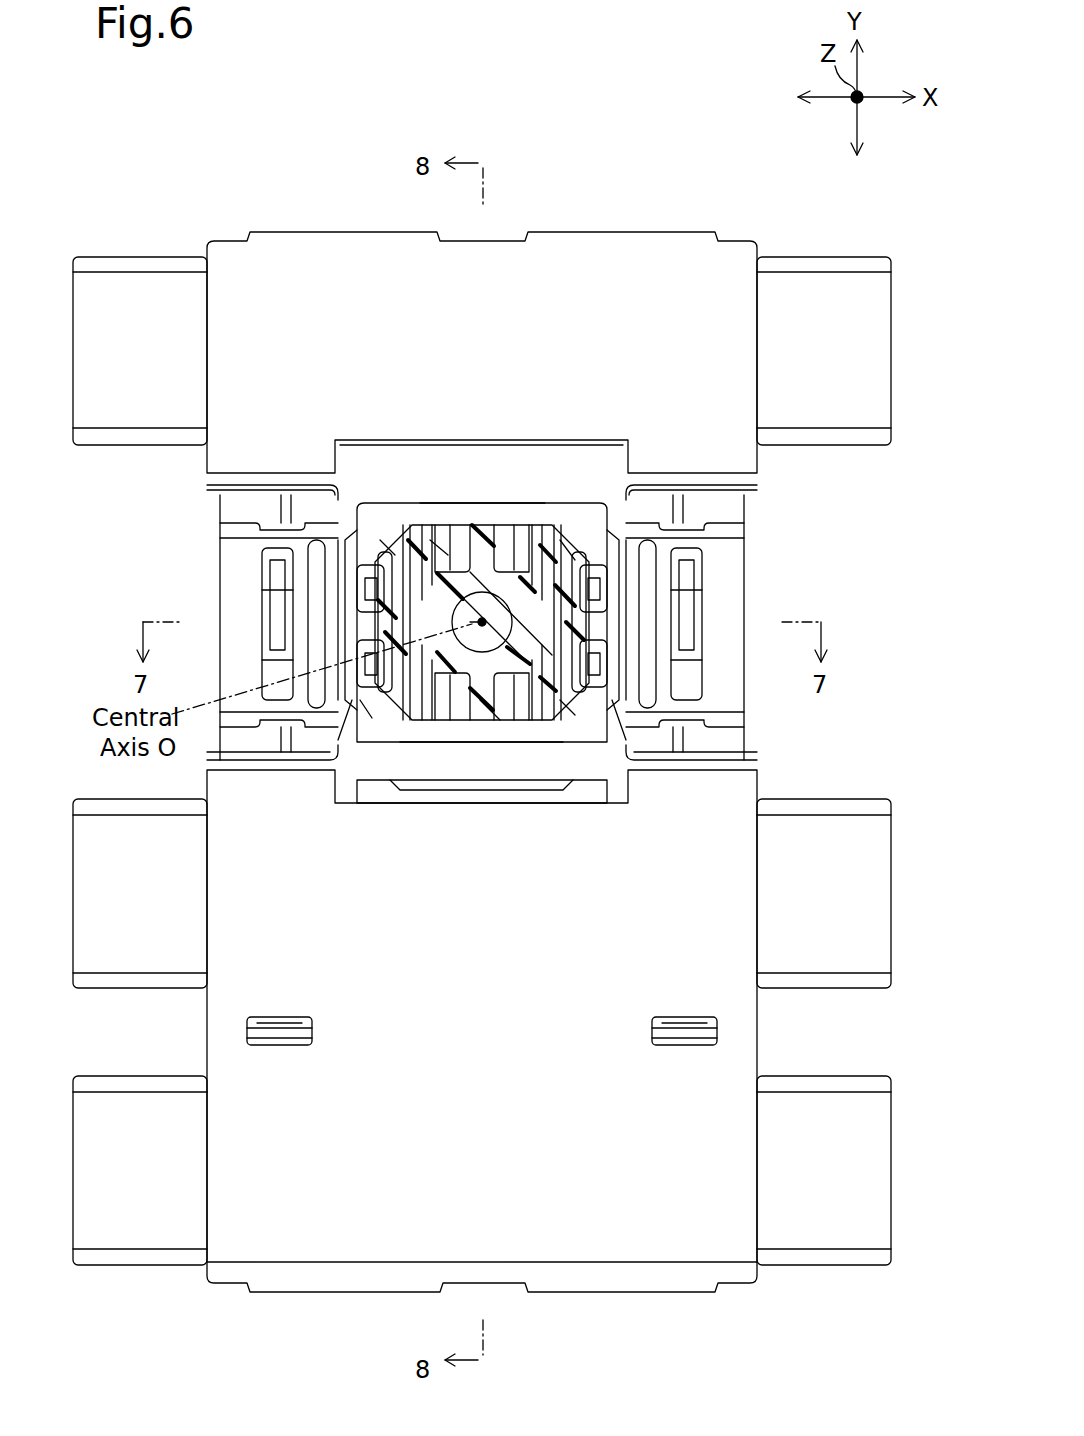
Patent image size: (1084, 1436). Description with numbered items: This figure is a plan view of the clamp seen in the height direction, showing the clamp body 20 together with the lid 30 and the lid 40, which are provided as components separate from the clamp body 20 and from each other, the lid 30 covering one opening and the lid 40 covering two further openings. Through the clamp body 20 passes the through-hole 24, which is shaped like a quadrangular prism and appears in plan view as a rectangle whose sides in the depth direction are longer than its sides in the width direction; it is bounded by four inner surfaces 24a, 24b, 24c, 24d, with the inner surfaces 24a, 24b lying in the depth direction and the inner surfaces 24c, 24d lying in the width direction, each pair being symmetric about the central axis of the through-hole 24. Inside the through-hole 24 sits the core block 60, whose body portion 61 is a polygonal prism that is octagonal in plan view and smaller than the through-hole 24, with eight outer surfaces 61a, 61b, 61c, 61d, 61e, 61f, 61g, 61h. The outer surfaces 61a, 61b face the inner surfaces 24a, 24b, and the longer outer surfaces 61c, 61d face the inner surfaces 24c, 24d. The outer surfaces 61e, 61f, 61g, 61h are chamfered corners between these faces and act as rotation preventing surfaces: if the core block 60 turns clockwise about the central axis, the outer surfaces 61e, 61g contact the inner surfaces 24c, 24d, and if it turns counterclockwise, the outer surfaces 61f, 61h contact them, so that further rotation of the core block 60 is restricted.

The clamp body 20 is at (751, 560).
The through-hole 24 is at (612, 540).
The inner surface 24a is at (620, 612).
The inner surface 24b is at (355, 596).
The inner surface 24c is at (462, 745).
The inner surface 24d is at (475, 512).
The lid 30 is at (750, 342).
The lid 40 is at (750, 1175).
The core block 60 is at (390, 705).
The body portion 61 is at (503, 530).
The outer surface 61a is at (628, 740).
The outer surface 61b is at (338, 740).
The outer surface 61c is at (497, 718).
The outer surface 61d is at (445, 542).
The outer surface 61e is at (575, 715).
The outer surface 61f is at (372, 718).
The outer surface 61g is at (393, 542).
The outer surface 61h is at (572, 545).